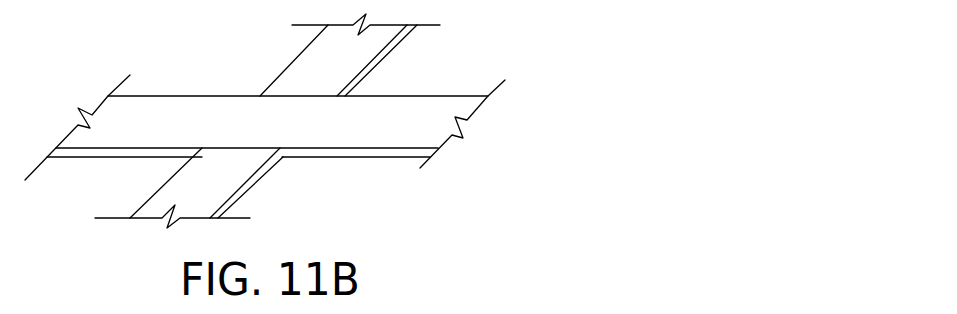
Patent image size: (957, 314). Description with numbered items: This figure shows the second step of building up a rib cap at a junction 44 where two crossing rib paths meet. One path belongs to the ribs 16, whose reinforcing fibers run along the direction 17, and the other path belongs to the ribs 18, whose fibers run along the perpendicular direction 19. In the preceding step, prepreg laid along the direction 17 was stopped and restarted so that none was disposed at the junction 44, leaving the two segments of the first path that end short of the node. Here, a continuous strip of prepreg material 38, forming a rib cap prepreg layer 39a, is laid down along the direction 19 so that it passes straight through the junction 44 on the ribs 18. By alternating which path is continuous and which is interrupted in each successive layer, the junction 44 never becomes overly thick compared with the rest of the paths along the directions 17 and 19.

The junction 44 is at (267, 122).
The prepreg material 38 is at (364, 128).
The rib cap prepreg layer 39a is at (364, 128).
The ribs 16 is at (446, 55).
The direction 17 is at (333, 68).
The ribs 18 is at (330, 189).
The direction 19 is at (348, 135).